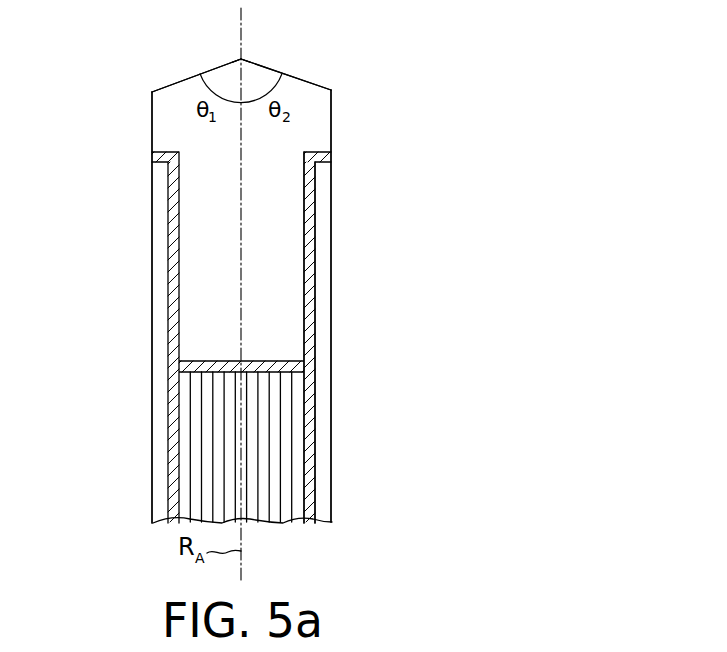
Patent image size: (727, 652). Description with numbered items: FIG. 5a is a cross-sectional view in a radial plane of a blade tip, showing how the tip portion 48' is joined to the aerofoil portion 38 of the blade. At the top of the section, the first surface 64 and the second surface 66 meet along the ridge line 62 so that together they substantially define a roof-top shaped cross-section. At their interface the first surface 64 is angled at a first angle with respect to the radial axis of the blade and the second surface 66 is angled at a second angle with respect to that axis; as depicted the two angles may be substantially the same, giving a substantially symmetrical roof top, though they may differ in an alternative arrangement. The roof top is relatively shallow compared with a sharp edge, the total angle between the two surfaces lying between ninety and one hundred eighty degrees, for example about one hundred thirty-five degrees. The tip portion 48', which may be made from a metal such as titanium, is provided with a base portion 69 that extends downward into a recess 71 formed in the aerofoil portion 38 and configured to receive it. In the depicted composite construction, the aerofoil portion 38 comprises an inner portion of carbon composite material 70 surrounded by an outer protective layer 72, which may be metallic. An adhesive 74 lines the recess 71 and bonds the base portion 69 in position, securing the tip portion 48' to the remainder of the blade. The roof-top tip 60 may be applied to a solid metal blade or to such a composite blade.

The aerofoil portion 38 is at (121, 508).
The tip portion 48' is at (297, 306).
The tip 60 is at (193, 75).
The ridge line 62 is at (241, 59).
The first surface 64 is at (163, 86).
The second surface 66 is at (307, 80).
The base portion 69 is at (292, 297).
The inner portion of carbon composite material 70 is at (197, 433).
The recess 71 is at (292, 235).
The outer protective layer 72 is at (323, 427).
The adhesive 74 is at (313, 338).